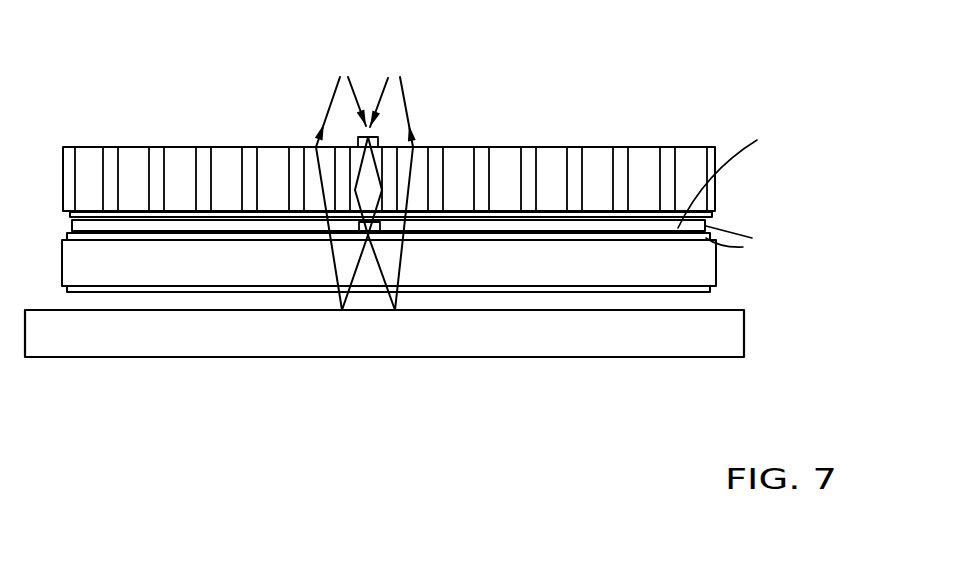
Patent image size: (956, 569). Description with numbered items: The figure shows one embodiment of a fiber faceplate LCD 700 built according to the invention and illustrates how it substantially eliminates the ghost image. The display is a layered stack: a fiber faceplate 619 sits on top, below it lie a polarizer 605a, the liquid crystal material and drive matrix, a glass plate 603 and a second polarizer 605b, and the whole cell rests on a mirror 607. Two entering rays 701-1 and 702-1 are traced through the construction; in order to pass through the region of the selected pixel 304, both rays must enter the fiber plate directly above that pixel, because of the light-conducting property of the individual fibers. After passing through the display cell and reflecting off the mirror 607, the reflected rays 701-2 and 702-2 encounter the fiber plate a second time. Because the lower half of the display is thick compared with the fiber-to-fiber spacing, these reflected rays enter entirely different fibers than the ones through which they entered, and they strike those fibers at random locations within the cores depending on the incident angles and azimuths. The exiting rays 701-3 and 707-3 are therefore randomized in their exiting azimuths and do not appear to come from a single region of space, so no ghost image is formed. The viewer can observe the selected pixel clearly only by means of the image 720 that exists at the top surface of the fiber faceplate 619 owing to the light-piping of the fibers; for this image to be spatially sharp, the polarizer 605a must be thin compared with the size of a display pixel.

The light valve display assembly 700 is at (442, 234).
The fiber faceplate 619 is at (137, 160).
The polarizer 605a is at (717, 218).
The second polarizer 605b is at (628, 298).
The glass plate 603 is at (700, 275).
The mirror 607 is at (665, 358).
The image 720 is at (378, 136).
The selected pixel 304 is at (381, 215).
The entering ray 702-1 is at (356, 72).
The entering ray 701-1 is at (382, 75).
The exiting reflected light ray 707-3 is at (333, 93).
The exiting ray 701-3 is at (408, 78).
The reflected ray 702-2 is at (333, 264).
The reflected ray 701-2 is at (405, 263).